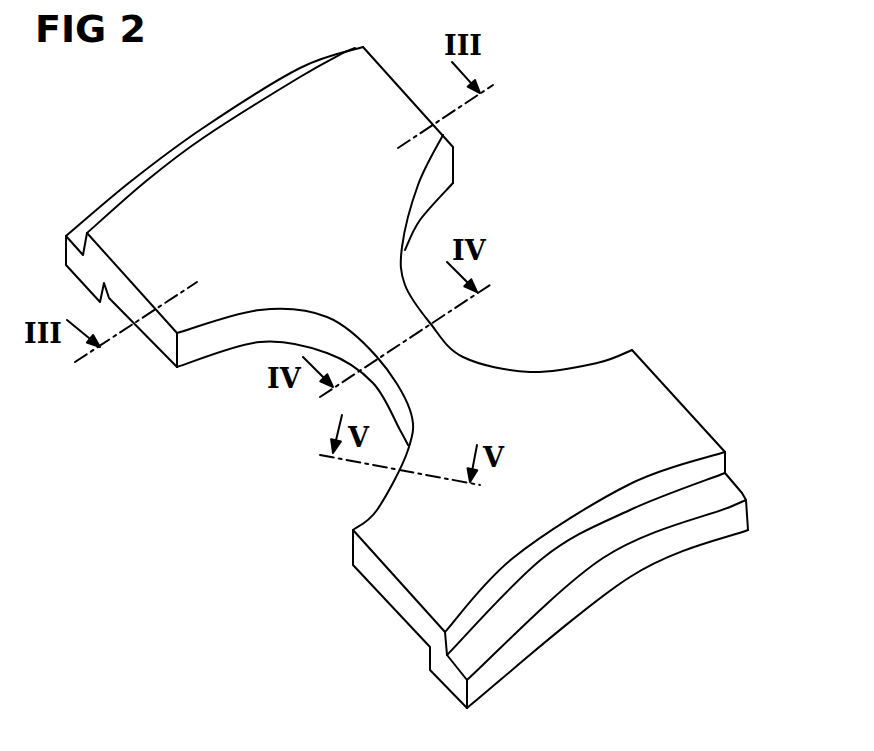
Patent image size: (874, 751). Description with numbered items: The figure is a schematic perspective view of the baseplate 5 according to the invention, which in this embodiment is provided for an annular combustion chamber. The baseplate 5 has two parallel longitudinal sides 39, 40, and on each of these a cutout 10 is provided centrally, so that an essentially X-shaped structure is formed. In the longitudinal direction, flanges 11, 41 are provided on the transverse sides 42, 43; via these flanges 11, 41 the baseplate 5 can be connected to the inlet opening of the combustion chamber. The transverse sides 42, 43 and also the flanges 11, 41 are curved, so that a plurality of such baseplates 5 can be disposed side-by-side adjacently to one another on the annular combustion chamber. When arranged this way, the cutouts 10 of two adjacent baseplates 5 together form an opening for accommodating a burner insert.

The baseplate 5 is at (437, 143).
The cutout 10 is at (510, 306).
The flange 11 is at (203, 133).
The longitudinal side 39 is at (383, 577).
The longitudinal side 40 is at (695, 408).
The flange 41 is at (510, 607).
The transverse side 42 is at (77, 227).
The transverse side 43 is at (458, 628).